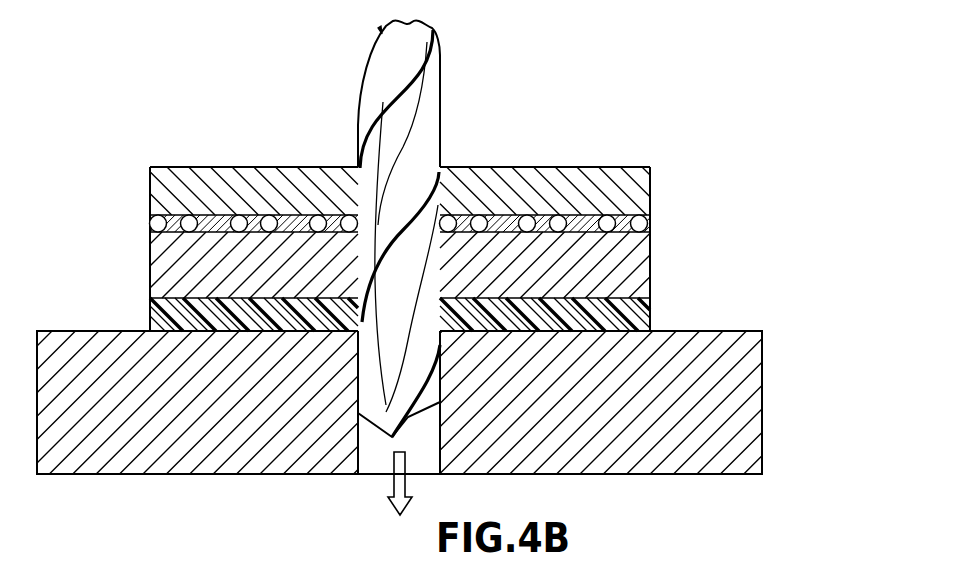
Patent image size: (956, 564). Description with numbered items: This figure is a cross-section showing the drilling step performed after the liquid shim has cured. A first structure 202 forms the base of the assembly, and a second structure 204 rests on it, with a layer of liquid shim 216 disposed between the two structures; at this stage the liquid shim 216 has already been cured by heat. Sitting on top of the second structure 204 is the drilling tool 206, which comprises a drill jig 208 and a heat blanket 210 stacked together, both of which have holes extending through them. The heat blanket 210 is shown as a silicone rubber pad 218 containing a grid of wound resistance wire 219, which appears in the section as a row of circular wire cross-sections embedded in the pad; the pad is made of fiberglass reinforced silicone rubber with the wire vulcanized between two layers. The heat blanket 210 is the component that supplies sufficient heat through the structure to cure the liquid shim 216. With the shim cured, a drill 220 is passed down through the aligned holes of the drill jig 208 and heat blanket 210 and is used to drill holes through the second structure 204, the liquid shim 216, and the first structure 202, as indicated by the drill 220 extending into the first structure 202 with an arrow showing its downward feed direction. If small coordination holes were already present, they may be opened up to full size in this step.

The first structure 202 is at (762, 373).
The second structure 204 is at (650, 290).
The drilling tool 206 is at (668, 202).
The drill jig 208 is at (650, 172).
The heat blanket 210 is at (650, 235).
The liquid shim 216 is at (151, 326).
The silicone rubber pad 218 is at (214, 233).
The wound resistance wire 219 is at (231, 217).
The drill 220 is at (440, 136).